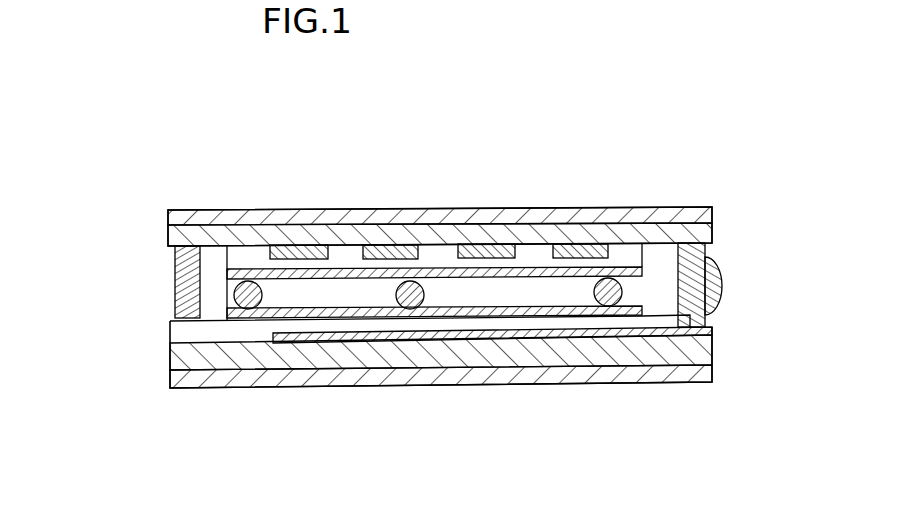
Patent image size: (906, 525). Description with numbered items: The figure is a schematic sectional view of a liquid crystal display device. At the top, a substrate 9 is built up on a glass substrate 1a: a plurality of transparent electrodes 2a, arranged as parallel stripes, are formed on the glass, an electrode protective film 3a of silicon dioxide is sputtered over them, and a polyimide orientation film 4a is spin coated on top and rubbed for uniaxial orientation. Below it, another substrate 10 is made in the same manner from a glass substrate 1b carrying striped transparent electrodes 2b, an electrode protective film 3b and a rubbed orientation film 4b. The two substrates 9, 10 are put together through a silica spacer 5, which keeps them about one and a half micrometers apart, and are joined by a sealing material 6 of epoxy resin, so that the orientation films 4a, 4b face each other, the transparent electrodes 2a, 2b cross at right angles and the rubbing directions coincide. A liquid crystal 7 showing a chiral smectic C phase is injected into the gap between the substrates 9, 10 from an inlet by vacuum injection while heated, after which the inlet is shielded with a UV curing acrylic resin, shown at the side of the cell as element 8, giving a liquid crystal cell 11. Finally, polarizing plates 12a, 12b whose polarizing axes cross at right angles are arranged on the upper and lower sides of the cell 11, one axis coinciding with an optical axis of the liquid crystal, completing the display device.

The glass substrate 1a is at (421, 237).
The glass substrate 1b is at (447, 353).
The transparent electrodes 2a is at (501, 250).
The transparent electrodes 2b is at (603, 326).
The electrode protective film 3a is at (608, 256).
The electrode protective film 3b is at (665, 318).
The orientation film 4a is at (655, 262).
The orientation film 4b is at (650, 312).
The silica spacer 5 is at (233, 297).
The sealing material 6 is at (705, 255).
The liquid crystal 7 is at (320, 293).
The injection hole sealant 8 is at (722, 288).
The substrate 9 is at (413, 182).
The substrate 10 is at (405, 380).
The liquid crystal cell 11 is at (85, 220).
The polarizing plate 12a is at (361, 217).
The polarizing plate 12b is at (393, 377).